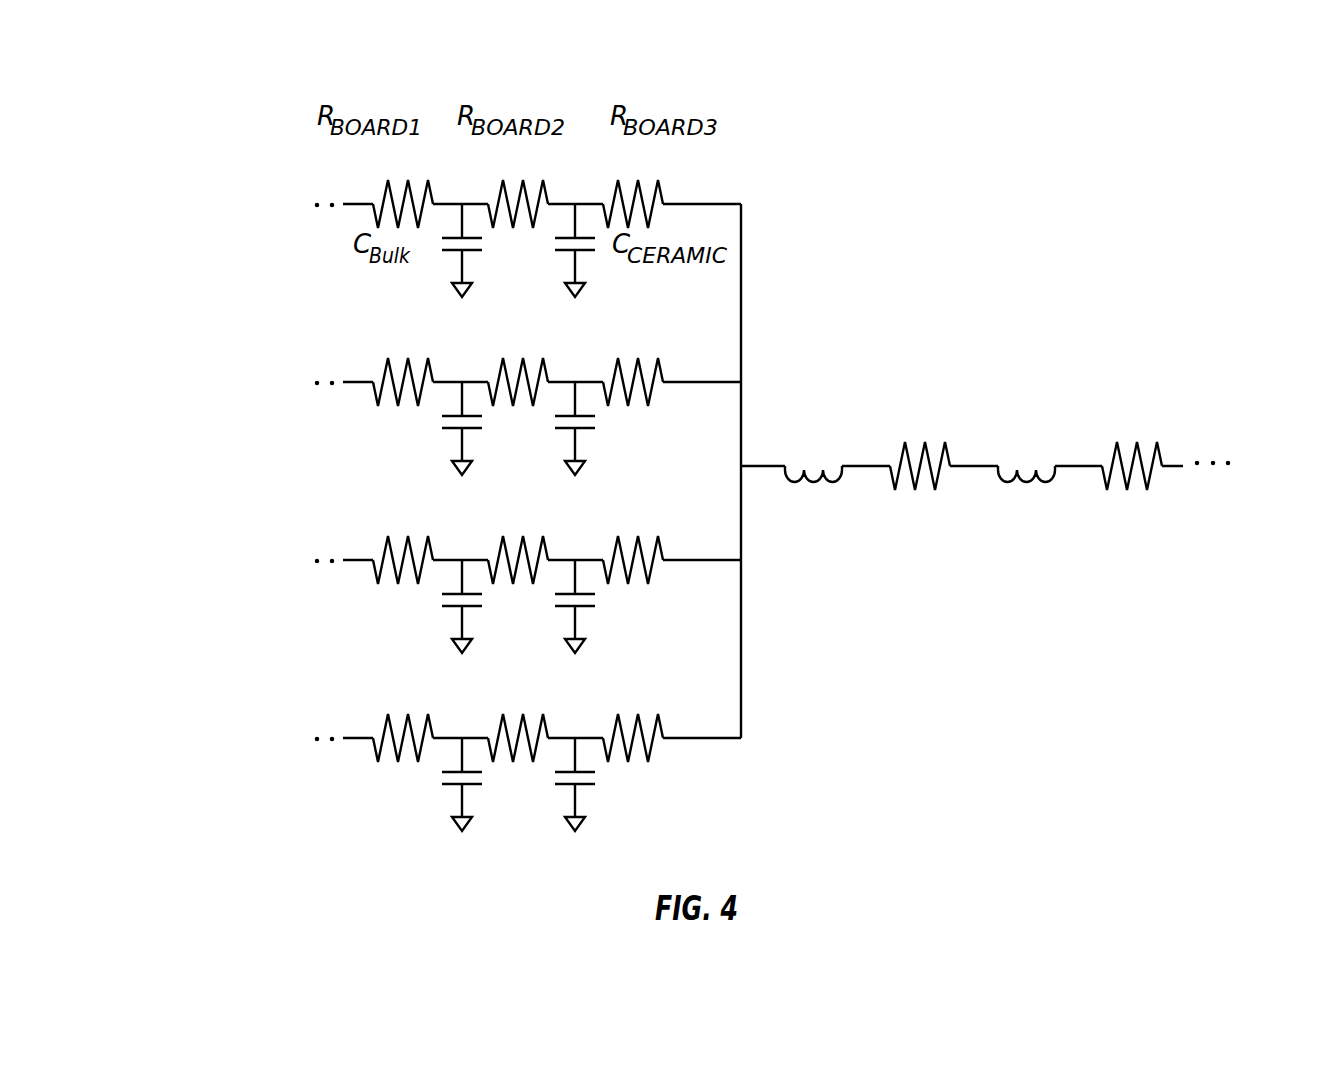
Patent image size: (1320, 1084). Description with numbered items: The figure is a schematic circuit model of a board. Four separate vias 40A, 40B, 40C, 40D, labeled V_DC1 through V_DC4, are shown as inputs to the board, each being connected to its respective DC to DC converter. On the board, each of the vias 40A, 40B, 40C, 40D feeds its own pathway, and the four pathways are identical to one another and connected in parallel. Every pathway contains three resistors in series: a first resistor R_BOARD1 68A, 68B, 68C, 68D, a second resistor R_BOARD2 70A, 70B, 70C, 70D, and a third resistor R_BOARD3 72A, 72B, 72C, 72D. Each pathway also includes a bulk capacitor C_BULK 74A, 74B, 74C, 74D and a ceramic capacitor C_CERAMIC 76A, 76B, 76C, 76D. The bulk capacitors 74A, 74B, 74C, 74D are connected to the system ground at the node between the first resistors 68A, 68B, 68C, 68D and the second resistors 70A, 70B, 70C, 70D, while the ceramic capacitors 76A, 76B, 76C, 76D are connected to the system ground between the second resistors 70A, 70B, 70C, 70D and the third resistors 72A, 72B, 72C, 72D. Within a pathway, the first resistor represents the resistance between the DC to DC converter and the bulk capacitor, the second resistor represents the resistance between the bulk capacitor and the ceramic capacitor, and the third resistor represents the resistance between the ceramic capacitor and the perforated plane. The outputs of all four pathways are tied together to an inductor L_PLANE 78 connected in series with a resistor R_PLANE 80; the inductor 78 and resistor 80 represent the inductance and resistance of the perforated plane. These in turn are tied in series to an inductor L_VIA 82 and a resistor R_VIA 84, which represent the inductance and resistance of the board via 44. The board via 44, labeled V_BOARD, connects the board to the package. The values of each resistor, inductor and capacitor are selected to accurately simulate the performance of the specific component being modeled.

The via 40A is at (305, 206).
The via 40B is at (305, 384).
The via 40C is at (305, 562).
The via 40D is at (305, 740).
The resistor R_BOARD1 68A is at (387, 181).
The resistor R_BOARD1 68B is at (379, 406).
The resistor R_BOARD1 68C is at (381, 584).
The resistor R_BOARD1 68D is at (381, 762).
The resistor R_BOARD2 70A is at (522, 180).
The resistor R_BOARD2 70B is at (522, 358).
The resistor R_BOARD2 70C is at (523, 536).
The resistor R_BOARD2 70D is at (524, 713).
The resistor R_BOARD3 72A is at (638, 180).
The resistor R_BOARD3 72B is at (638, 358).
The resistor R_BOARD3 72C is at (640, 536).
The resistor R_BOARD3 72D is at (659, 713).
The bulk capacitor 74A is at (442, 248).
The bulk capacitor 74B is at (442, 427).
The bulk capacitor 74C is at (442, 605).
The bulk capacitor 74D is at (442, 784).
The ceramic capacitor 76A is at (594, 247).
The ceramic capacitor 76B is at (594, 425).
The ceramic capacitor 76C is at (595, 606).
The ceramic capacitor 76D is at (596, 781).
The inductor L_PLANE 78 is at (814, 491).
The resistor R_PLANE 80 is at (916, 491).
The inductor L_VIA 82 is at (1025, 491).
The resistor R_VIA 84 is at (1127, 491).
The board via 44 is at (1197, 469).